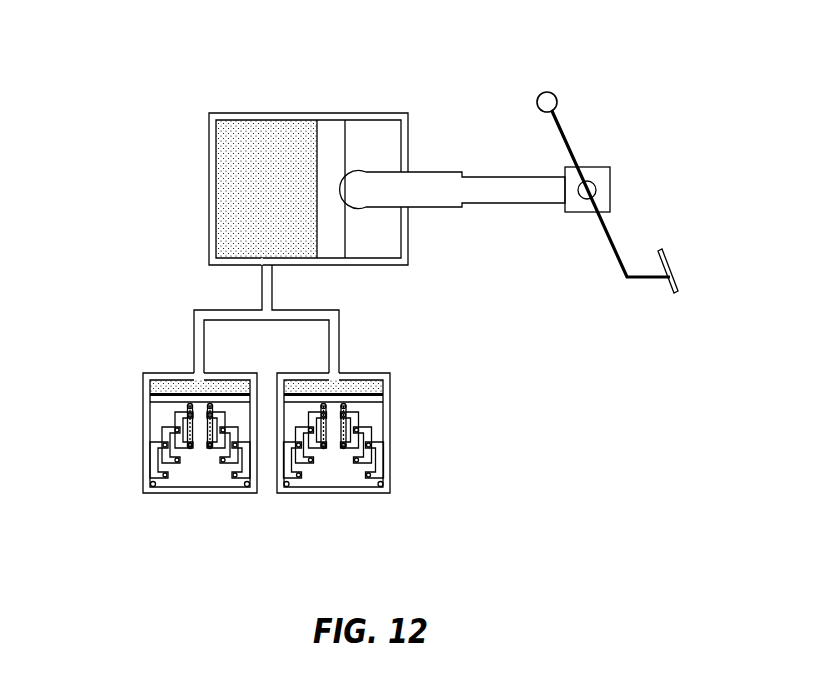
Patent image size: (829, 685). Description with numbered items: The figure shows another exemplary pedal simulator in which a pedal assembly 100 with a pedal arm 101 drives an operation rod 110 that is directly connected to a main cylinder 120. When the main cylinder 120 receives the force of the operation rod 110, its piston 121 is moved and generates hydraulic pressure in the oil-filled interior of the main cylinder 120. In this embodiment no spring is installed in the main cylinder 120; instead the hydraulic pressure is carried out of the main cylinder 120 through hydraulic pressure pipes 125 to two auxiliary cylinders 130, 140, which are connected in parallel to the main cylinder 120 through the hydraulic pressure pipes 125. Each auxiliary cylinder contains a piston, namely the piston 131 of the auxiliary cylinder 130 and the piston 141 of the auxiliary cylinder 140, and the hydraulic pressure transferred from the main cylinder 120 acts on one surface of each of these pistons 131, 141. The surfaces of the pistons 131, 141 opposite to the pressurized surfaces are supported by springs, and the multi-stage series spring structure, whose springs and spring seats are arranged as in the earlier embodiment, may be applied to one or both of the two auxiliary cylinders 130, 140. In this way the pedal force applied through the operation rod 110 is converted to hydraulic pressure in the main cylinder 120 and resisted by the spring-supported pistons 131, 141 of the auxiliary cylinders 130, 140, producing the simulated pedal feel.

The pedal assembly 100 is at (626, 157).
The pedal arm 101 is at (613, 243).
The operation rod 110 is at (447, 178).
The main cylinder 120 is at (260, 113).
The piston 121 is at (334, 128).
The hydraulic pressure pipes 125 is at (339, 345).
The auxiliary cylinder 130 is at (145, 404).
The piston 131 is at (163, 395).
The auxiliary cylinder 140 is at (398, 433).
The piston 141 is at (388, 393).